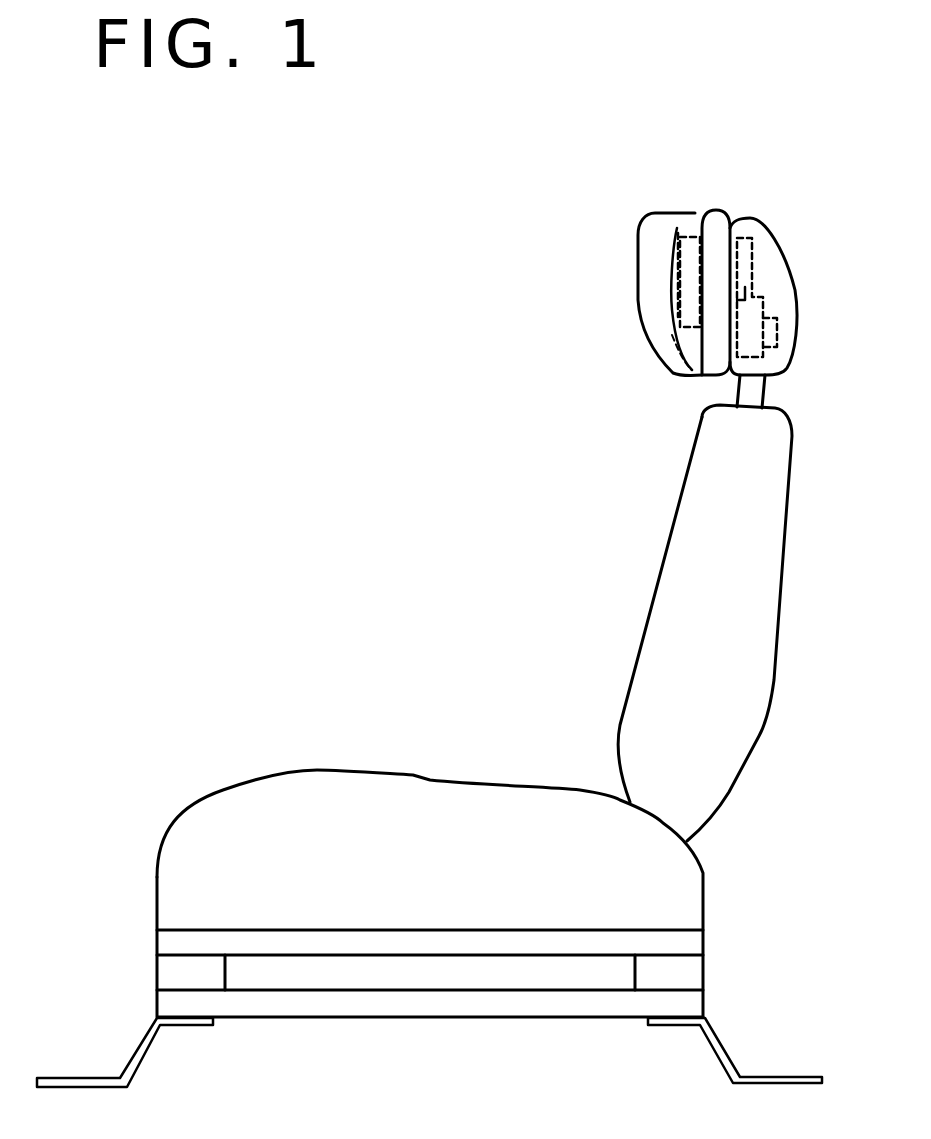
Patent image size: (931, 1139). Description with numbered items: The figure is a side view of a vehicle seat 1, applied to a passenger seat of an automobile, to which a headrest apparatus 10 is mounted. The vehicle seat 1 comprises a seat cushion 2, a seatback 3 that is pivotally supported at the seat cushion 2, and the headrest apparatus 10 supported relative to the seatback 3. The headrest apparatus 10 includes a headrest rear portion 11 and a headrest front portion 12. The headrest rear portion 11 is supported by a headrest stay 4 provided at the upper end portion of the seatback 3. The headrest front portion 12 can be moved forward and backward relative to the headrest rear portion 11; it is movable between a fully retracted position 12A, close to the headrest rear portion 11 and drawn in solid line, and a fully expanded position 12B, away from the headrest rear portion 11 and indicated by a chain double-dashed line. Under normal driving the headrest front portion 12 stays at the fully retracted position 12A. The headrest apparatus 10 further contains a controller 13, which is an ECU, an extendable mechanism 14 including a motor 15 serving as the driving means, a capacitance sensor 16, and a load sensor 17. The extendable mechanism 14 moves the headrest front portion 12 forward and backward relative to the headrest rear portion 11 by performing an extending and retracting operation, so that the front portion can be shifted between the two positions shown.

The vehicle seat 1 is at (442, 478).
The seat cushion 2 is at (412, 777).
The seatback 3 is at (647, 610).
The headrest stay 4 is at (767, 397).
The headrest apparatus 10 is at (633, 203).
The headrest rear portion 11 is at (800, 283).
The headrest front portion 12 is at (718, 212).
The fully retracted position 12A is at (700, 212).
The fully expanded position 12B is at (637, 300).
The controller 13 is at (762, 252).
The extendable mechanism 14 is at (777, 311).
The motor 15 is at (780, 340).
The capacitance sensor 16 is at (673, 300).
The load sensor 17 is at (672, 335).